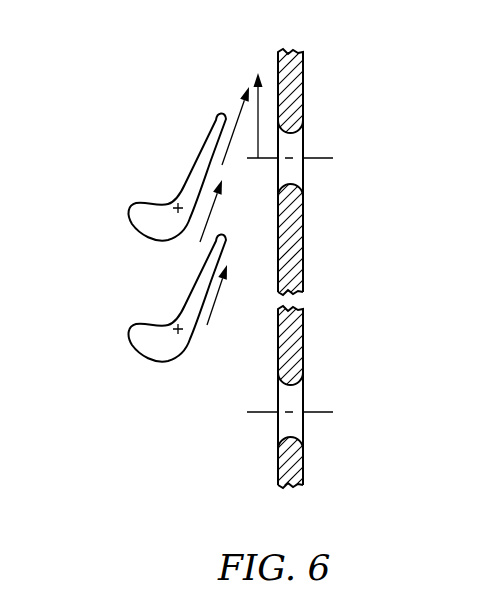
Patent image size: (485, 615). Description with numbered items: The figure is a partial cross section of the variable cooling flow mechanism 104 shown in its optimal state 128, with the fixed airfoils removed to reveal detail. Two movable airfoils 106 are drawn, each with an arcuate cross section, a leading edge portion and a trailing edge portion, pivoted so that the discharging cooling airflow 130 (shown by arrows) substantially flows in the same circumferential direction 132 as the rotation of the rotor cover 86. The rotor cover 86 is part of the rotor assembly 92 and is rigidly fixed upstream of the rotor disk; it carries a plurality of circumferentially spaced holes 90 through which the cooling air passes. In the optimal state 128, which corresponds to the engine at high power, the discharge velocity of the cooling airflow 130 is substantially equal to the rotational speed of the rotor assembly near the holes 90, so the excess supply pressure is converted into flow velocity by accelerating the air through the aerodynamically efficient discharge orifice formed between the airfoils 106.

The rotor cover 86 is at (290, 258).
The holes 90 is at (290, 175).
The rotor assembly 92 is at (382, 73).
The variable cooling flow mechanism 104 is at (102, 119).
The movable airfoil 106 is at (148, 240).
The optimal state 128 is at (154, 121).
The discharging cooling airflow 130 is at (230, 111).
The circumferential direction of rotation 132 is at (257, 135).